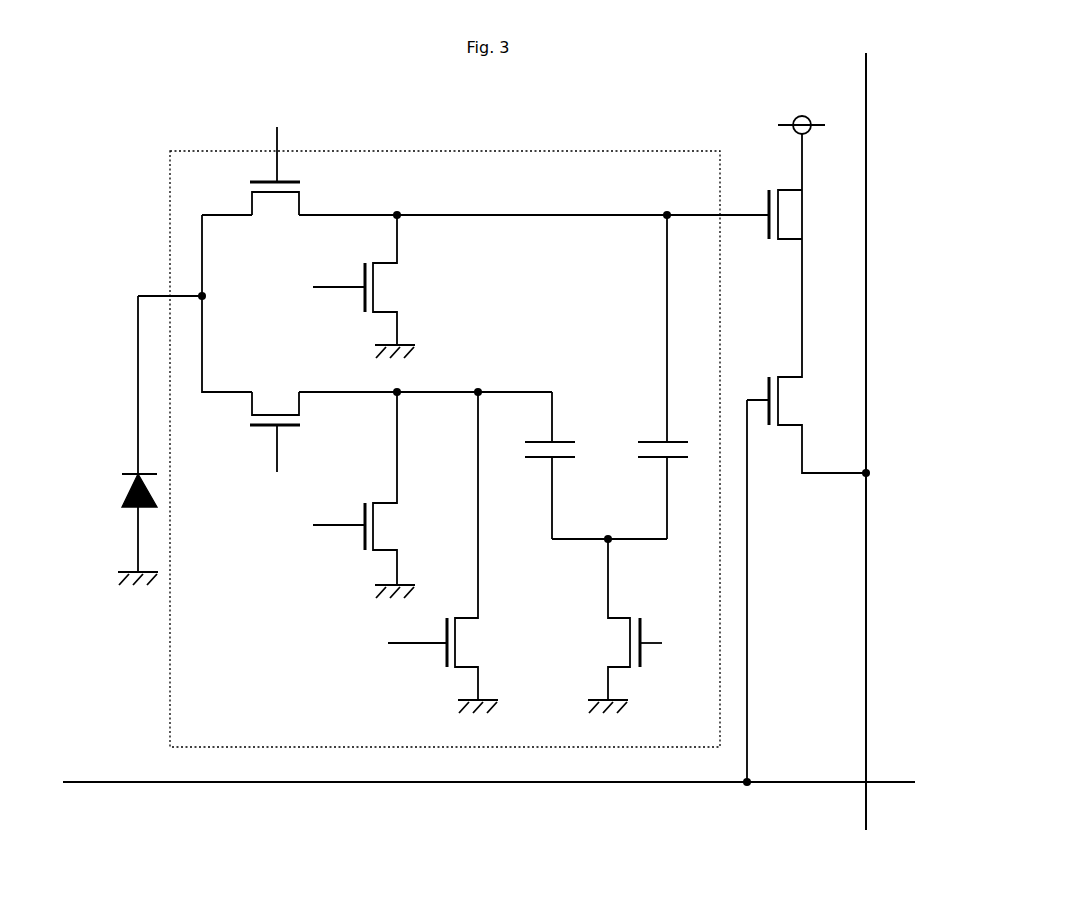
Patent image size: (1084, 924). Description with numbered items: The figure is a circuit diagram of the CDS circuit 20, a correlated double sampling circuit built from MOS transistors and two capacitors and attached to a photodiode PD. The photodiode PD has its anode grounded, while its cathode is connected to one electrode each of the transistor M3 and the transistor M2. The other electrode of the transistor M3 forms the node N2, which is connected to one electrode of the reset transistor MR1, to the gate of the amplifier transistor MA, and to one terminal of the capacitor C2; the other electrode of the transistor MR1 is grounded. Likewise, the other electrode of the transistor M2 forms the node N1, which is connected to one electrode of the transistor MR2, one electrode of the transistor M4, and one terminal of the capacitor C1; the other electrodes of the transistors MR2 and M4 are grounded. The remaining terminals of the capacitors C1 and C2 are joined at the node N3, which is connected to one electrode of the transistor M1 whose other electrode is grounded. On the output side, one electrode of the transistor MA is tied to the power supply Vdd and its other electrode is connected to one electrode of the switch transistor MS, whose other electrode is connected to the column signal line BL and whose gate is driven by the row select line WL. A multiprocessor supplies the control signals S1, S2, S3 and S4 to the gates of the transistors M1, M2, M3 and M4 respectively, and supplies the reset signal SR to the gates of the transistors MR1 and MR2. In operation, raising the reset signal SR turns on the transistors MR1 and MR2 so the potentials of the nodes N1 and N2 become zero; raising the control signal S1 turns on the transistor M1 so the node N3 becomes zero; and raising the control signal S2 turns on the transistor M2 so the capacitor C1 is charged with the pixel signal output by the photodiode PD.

The CDS circuit 20 is at (463, 151).
The control signal S3 is at (277, 145).
The transistor M3 is at (275, 209).
The transistor MR1 is at (402, 286).
The reset signal SR is at (325, 406).
The node N2 is at (513, 215).
The transistor M2 is at (275, 399).
The control signal S2 is at (277, 460).
The transistor MR2 is at (402, 495).
The node N1 is at (442, 392).
The capacitor C1 is at (554, 465).
The capacitor C2 is at (668, 377).
The node N3 is at (570, 539).
The transistor M4 is at (476, 552).
The control signal S4 is at (404, 644).
The transistor M1 is at (610, 626).
The control signal S1 is at (662, 644).
The photodiode PD is at (122, 493).
The power supply Vdd is at (801, 143).
The transistor MA is at (799, 214).
The transistor MS is at (806, 510).
The column signal line BL is at (866, 633).
The row select line WL is at (592, 782).